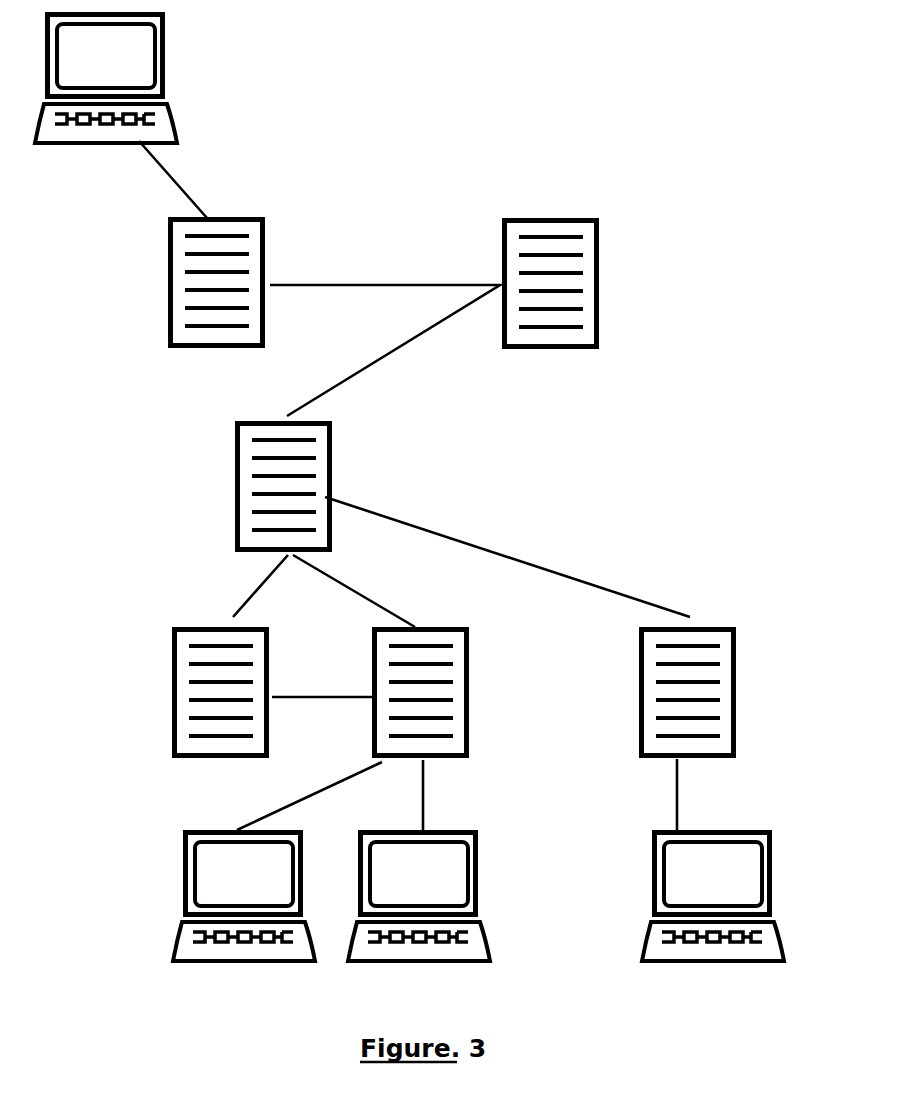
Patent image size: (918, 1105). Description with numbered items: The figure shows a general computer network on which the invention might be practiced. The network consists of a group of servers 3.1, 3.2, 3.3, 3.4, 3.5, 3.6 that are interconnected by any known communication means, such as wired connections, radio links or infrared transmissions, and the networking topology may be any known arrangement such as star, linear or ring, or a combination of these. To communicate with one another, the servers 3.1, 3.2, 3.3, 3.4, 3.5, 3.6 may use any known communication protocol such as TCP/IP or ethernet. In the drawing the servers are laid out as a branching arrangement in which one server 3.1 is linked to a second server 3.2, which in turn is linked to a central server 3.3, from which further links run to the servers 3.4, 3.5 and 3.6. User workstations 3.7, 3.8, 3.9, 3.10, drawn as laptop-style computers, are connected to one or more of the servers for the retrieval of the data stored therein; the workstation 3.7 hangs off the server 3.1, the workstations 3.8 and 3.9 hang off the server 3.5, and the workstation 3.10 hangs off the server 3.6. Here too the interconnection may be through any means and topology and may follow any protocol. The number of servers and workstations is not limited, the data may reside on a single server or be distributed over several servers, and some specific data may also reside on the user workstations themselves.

The server 3.1 is at (256, 281).
The server 3.2 is at (551, 255).
The server 3.3 is at (325, 487).
The server 3.4 is at (203, 658).
The server 3.5 is at (421, 665).
The server 3.6 is at (651, 693).
The user workstation 3.7 is at (142, 79).
The user workstation 3.8 is at (242, 873).
The user workstation 3.9 is at (449, 897).
The user workstation 3.10 is at (726, 873).